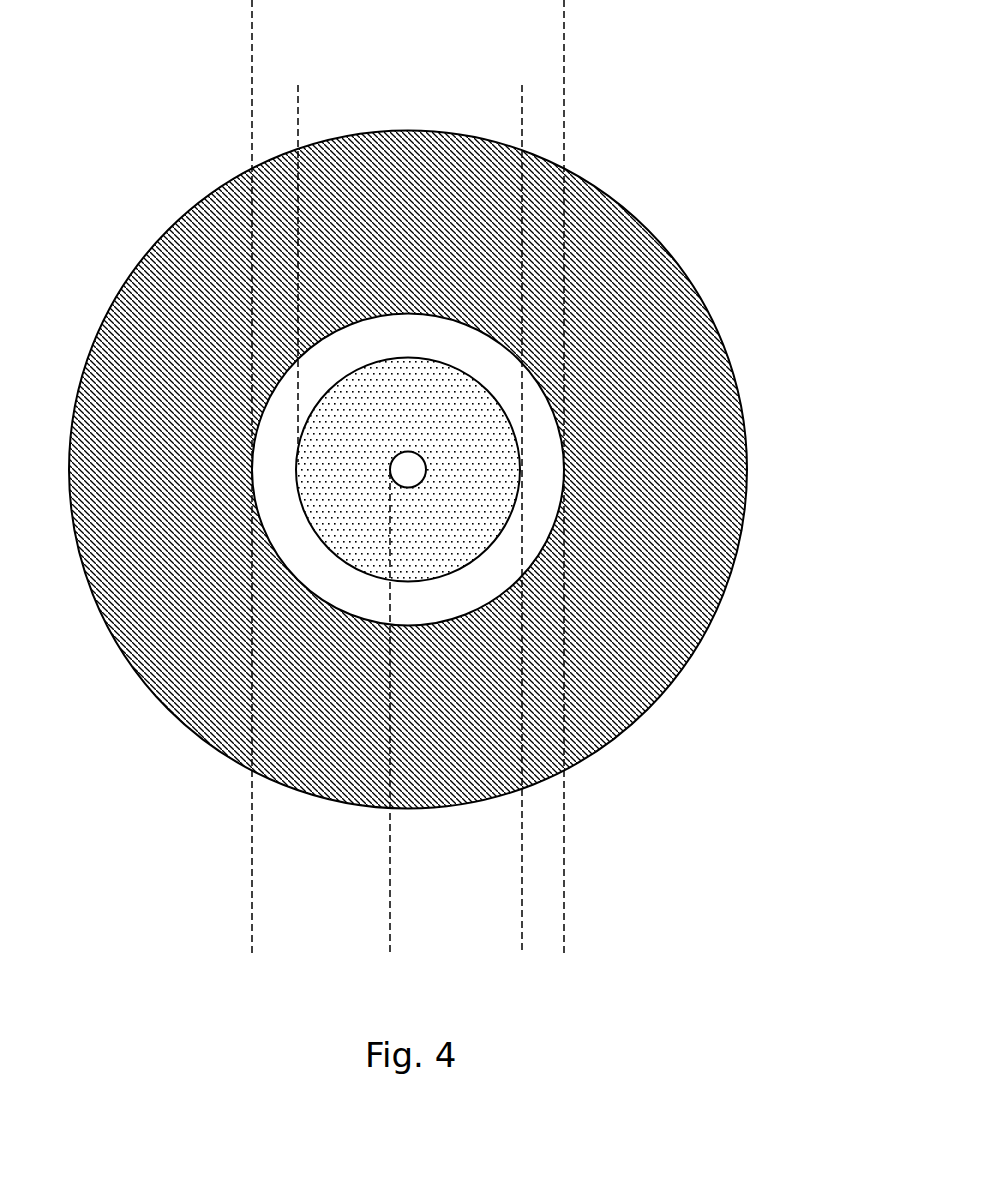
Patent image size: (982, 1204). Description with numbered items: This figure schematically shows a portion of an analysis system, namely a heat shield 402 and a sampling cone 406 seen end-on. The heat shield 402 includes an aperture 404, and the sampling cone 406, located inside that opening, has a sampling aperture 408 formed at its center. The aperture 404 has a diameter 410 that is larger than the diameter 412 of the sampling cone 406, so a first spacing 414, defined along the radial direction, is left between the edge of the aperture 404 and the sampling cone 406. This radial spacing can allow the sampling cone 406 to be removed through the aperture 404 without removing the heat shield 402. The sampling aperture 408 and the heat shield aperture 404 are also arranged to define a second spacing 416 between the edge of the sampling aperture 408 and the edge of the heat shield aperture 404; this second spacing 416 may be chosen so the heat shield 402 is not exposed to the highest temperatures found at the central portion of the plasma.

The heat shield 402 is at (738, 425).
The aperture 404 is at (480, 352).
The sampling cone 406 is at (503, 522).
The sampling aperture 408 is at (432, 470).
The diameter 410 is at (564, 32).
The diameter 412 is at (522, 99).
The first spacing 414 is at (522, 934).
The second spacing 416 is at (390, 934).